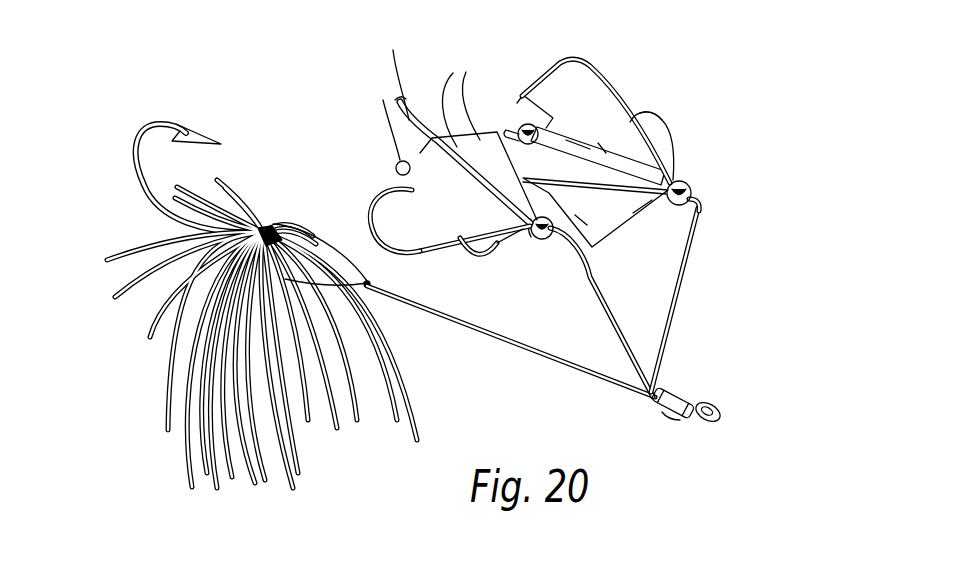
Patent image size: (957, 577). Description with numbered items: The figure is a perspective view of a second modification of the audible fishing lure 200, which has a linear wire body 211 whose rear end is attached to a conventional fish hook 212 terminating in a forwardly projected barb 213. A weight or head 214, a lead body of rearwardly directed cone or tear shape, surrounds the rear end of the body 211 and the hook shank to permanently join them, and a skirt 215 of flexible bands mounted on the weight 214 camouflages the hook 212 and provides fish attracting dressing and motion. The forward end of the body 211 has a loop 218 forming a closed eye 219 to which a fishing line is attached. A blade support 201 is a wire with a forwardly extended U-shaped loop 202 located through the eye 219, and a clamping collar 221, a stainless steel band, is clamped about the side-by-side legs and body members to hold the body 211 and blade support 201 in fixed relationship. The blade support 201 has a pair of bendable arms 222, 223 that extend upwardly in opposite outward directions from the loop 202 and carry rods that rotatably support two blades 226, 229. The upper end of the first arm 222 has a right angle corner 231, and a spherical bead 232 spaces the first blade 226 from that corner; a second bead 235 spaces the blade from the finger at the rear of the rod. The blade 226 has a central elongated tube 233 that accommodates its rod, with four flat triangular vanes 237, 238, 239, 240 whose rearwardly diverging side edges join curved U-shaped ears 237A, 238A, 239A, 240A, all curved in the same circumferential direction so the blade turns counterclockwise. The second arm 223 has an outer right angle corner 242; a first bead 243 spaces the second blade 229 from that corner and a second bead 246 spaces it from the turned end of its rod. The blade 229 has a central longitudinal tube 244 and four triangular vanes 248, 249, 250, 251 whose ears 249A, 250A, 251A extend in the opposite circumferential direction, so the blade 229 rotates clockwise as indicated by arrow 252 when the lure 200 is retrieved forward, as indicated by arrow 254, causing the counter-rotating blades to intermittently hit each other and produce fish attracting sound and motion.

The audible fishing lure 200 is at (760, 72).
The blade support 201 is at (677, 302).
The U-shaped loop 202 is at (664, 420).
The linear wire body 211 is at (505, 341).
The fish hook 212 is at (136, 148).
The barb 213 is at (176, 141).
The weight or head 214 is at (305, 247).
The skirt 215 is at (152, 338).
The loop 218 is at (716, 408).
The closed eye 219 is at (710, 420).
The clamping collar 221 is at (668, 394).
The first bendable arm 222 is at (627, 342).
The second bendable arm 223 is at (691, 245).
The first blade 226 is at (392, 116).
The second blade 229 is at (593, 63).
The right angle corner 231 is at (575, 266).
The spherical bead 232 is at (534, 238).
The central elongated tube 233 is at (434, 185).
The second bead 235 is at (396, 164).
The vane 237 is at (418, 246).
The curved ear 237A is at (373, 212).
The vane 238 is at (408, 88).
The curved ear 238A is at (383, 100).
The vane 239 is at (469, 76).
The curved ear 239A is at (460, 79).
The vane 240 is at (492, 246).
The curved ear 240A is at (473, 259).
The outer right angle corner 242 is at (700, 204).
The first bead 243 is at (692, 188).
The central longitudinal tube 244 is at (578, 153).
The second bead 246 is at (530, 122).
The vane 248 is at (563, 174).
The vane 249 is at (598, 88).
The ear 249A is at (551, 60).
The vane 250 is at (663, 143).
The ear 250A is at (656, 125).
The vane 251 is at (631, 208).
The ear 251A is at (583, 228).
The arrow 252 is at (600, 149).
The arrow 254 is at (834, 464).